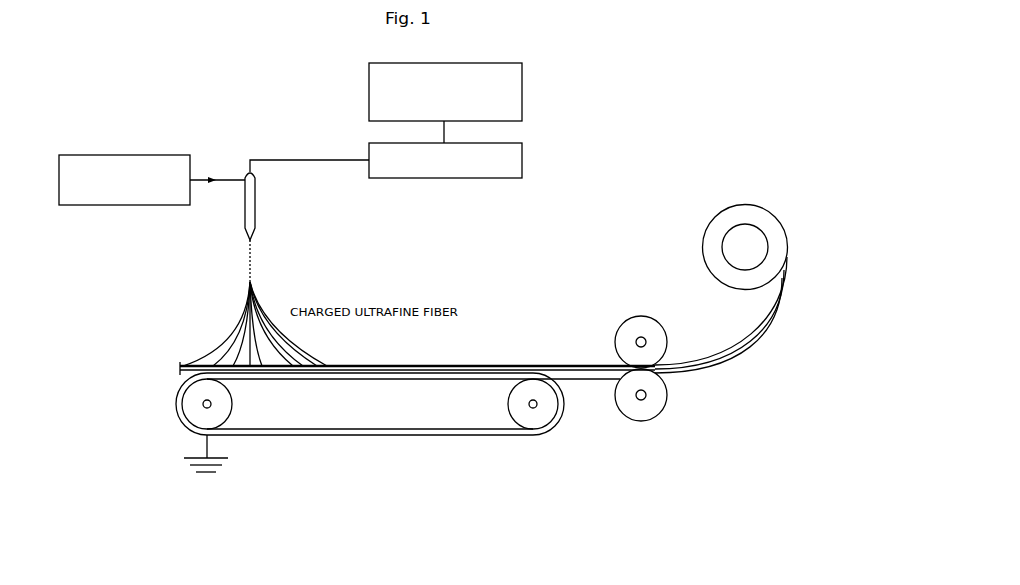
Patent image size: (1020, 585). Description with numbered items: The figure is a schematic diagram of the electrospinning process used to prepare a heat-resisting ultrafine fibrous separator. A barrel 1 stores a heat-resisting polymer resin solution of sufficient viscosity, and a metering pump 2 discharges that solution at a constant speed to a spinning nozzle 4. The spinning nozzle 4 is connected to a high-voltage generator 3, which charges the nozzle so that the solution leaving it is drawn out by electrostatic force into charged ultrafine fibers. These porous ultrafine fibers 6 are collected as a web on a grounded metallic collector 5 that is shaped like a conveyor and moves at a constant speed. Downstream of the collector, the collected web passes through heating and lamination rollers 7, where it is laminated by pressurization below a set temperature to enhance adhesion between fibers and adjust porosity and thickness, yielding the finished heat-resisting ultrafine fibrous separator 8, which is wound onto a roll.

The barrel 1 is at (445, 92).
The metering pump 2 is at (445, 160).
The high-voltage generator 3 is at (152, 180).
The spinning nozzle 4 is at (243, 222).
The grounded metallic conveyor collector 5 is at (263, 436).
The porous ultrafine fibers 6 is at (332, 400).
The heating/lamination roller 7 is at (636, 316).
The heat-resisting ultrafine fibrous separator 8 is at (737, 204).